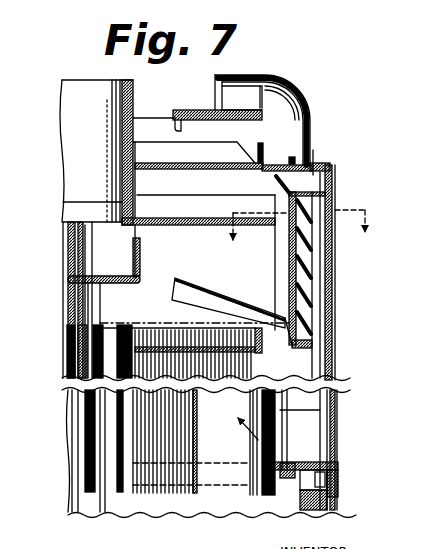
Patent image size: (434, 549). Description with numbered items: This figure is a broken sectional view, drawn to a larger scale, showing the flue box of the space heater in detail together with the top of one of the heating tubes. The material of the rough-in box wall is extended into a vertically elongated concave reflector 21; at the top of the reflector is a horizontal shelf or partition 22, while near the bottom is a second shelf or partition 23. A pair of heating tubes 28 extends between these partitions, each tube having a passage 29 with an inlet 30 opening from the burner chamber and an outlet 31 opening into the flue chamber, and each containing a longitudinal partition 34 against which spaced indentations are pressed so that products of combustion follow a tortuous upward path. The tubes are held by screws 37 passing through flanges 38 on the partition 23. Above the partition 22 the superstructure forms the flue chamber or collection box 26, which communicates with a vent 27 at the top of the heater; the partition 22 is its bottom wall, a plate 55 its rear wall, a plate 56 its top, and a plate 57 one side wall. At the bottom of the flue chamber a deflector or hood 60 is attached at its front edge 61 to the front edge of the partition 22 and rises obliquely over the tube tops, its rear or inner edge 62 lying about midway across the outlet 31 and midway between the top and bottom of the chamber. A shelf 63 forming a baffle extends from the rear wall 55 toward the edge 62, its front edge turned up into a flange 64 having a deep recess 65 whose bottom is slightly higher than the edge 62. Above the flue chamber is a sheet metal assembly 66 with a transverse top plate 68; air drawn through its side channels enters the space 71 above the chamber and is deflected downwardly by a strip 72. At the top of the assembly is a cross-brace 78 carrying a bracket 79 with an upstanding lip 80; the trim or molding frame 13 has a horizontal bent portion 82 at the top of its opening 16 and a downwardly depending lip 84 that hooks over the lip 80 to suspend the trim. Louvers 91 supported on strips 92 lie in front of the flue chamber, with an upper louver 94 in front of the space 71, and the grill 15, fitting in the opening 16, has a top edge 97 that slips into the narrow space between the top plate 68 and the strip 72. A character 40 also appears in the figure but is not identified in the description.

The molding frame 13 is at (300, 100).
The grill 15 is at (340, 433).
The opening 16 is at (309, 153).
The concave reflector 21 is at (90, 504).
The horizontal shelf or partition 22 is at (300, 358).
The second shelf or partition 23 is at (290, 467).
The flue chamber 26 is at (108, 298).
The vent 27 is at (82, 86).
The heating tubes 28 is at (280, 412).
The passage 29 is at (290, 464).
The inlet 30 is at (215, 497).
The outlet 31 is at (205, 347).
The longitudinal partition 34 is at (197, 408).
The screws 37 is at (252, 487).
The flanges 38 is at (285, 468).
The section line 40 is at (290, 238).
The rear wall plate 55 is at (75, 318).
The top plate 56 is at (165, 218).
The side wall plate 57 is at (199, 232).
The deflector or hood 60 is at (222, 294).
The front edge of hood 61 is at (300, 345).
The rear or inner edge of hood 62 is at (178, 277).
The shelf 63 is at (112, 283).
The flange 64 is at (140, 277).
The recess 65 is at (134, 246).
The sheet metal assembly 66 is at (143, 117).
The transverse top plate 68 is at (183, 161).
The space 71 is at (150, 176).
The strip 72 is at (280, 182).
The cross-brace 78 is at (212, 118).
The bracket 79 is at (268, 80).
The upstanding lip 80 is at (226, 79).
The horizontal bent portion 82 is at (291, 158).
The downwardly depending lip 84 is at (212, 108).
The louvers 91 is at (302, 262).
The strips 92 is at (307, 233).
The upper louver 94 is at (322, 201).
The top edge 97 is at (328, 168).